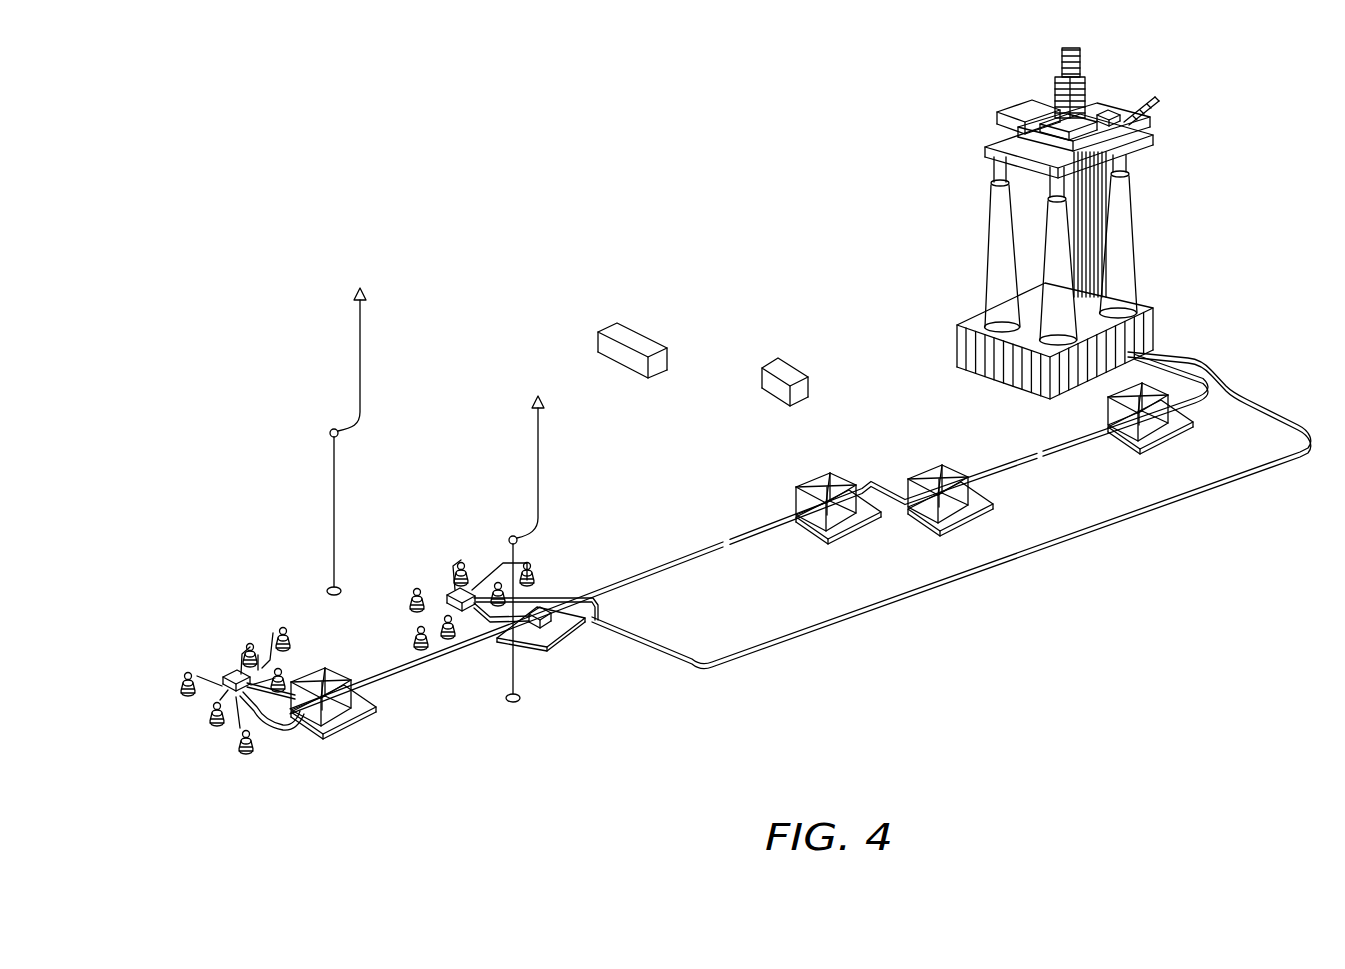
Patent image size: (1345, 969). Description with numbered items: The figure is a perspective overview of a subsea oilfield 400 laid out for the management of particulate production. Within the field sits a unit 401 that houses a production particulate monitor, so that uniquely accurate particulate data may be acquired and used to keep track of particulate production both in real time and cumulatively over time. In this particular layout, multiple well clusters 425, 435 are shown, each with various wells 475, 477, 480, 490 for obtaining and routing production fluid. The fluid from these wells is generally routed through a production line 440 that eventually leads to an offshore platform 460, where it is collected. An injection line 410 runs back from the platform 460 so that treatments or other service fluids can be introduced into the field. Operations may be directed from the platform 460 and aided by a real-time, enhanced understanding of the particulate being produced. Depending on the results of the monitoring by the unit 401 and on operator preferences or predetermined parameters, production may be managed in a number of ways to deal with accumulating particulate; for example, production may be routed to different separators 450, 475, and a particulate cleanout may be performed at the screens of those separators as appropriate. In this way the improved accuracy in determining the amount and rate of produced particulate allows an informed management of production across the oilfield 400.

The subsea oilfield 400 is at (1079, 614).
The unit 401 is at (545, 630).
The injection line 410 is at (1226, 484).
The well cluster 425 is at (556, 562).
The well cluster 435 is at (190, 742).
The production line 440 is at (768, 524).
The separator 450 is at (640, 333).
The offshore platform 460 is at (1212, 129).
The well / separator 475 is at (793, 362).
The well 477 is at (418, 630).
The well 480 is at (297, 632).
The well 490 is at (183, 683).